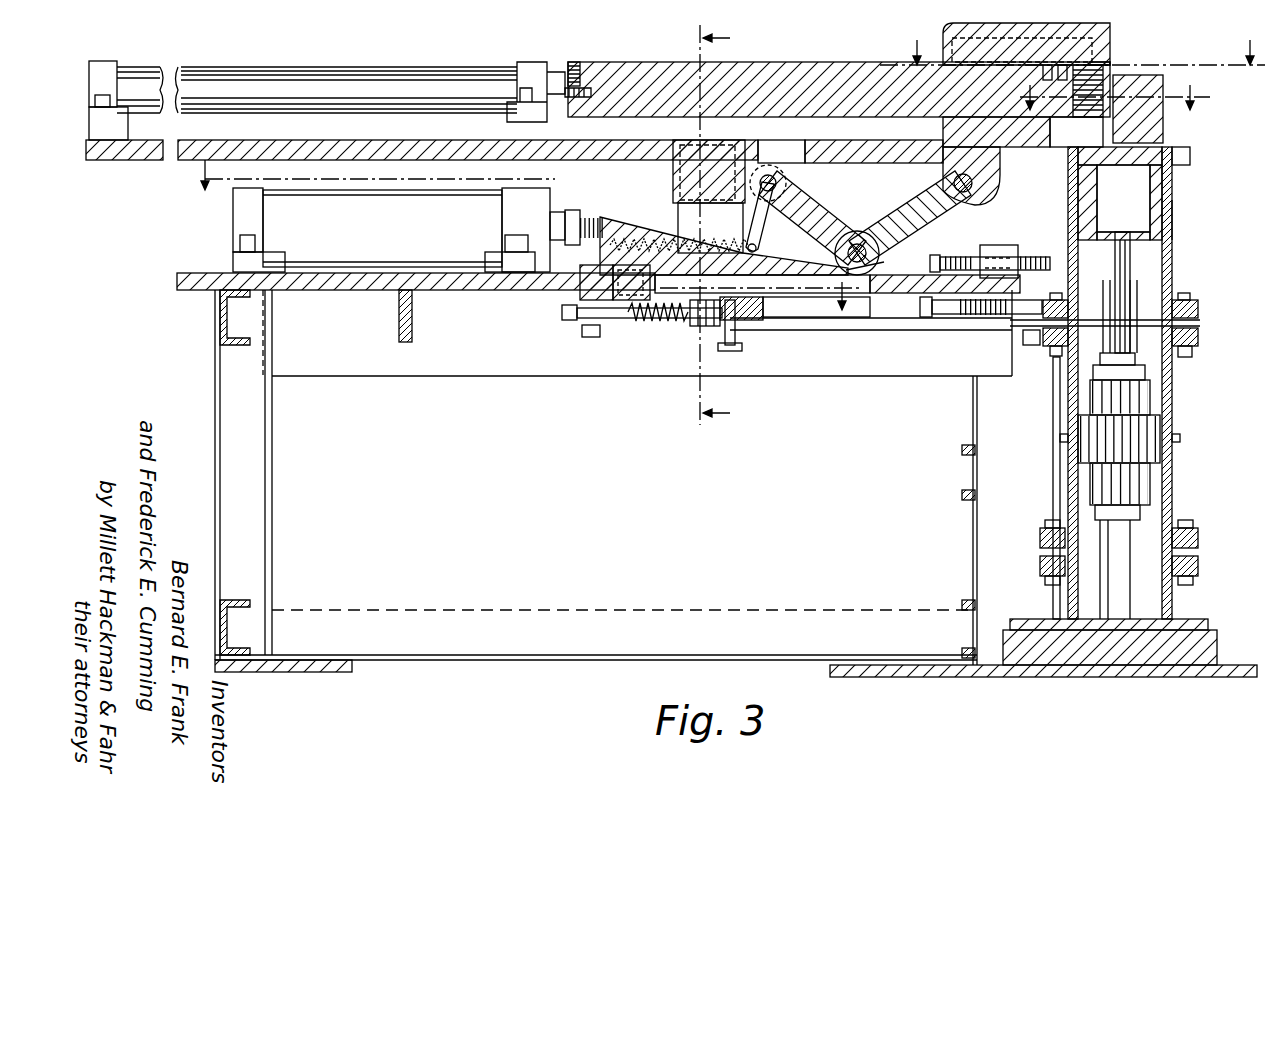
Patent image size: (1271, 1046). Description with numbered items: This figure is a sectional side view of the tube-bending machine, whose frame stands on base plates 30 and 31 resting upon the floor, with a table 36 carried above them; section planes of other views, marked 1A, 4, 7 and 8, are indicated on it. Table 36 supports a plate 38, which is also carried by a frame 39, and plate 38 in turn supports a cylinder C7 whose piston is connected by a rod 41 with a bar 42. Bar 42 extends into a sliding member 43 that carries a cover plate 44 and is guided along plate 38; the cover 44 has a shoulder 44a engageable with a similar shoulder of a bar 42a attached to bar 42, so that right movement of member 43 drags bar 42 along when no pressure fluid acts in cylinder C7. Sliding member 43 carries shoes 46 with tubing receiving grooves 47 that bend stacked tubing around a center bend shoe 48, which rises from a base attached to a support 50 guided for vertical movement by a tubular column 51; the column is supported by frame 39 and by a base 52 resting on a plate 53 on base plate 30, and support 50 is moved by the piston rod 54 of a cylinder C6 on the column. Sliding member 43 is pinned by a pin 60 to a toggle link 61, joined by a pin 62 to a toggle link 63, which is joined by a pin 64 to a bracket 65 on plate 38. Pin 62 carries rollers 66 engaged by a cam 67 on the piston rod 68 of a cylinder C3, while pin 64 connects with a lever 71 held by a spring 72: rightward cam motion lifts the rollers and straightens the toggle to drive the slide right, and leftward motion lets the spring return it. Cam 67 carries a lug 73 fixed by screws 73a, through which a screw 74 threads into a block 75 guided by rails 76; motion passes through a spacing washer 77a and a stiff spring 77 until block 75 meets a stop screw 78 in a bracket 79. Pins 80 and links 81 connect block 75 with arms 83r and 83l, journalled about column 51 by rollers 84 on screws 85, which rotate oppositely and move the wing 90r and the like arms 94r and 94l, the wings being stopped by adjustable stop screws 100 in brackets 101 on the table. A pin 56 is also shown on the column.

The base plate 30 is at (1195, 677).
The base plate 31 is at (305, 672).
The table 36 is at (177, 278).
The plate 38 is at (244, 140).
The frame 39 is at (678, 217).
The rod 41 is at (570, 62).
The bar 42 is at (864, 62).
The bar 42a is at (1108, 65).
The sliding member 43 is at (943, 130).
The cover plate 44 is at (943, 30).
The shoulder 44a is at (1055, 65).
The shoes 46 is at (1076, 132).
The tubing receiving grooves 47 is at (1104, 83).
The center bend shoe 48 is at (1153, 75).
The support 50 is at (1162, 180).
The tubular column 51 is at (1172, 217).
The base 52 is at (1200, 619).
The plate 53 is at (1217, 645).
The piston rod 54 is at (1125, 265).
The pin 56 is at (1180, 438).
The pin 60 is at (972, 185).
The toggle link 61 is at (905, 202).
The pin 62 is at (857, 232).
The toggle link 63 is at (814, 205).
The pin 64 is at (773, 165).
The bracket 65 is at (673, 180).
The rollers 66 is at (885, 265).
The cam 67 is at (793, 264).
The piston rod 68 is at (572, 210).
The lever 71 is at (748, 220).
The spring 72 is at (724, 244).
The lug 73 is at (580, 325).
The screws 73a is at (580, 338).
The screw 74 is at (562, 320).
The block 75 is at (700, 328).
The rails 76 is at (818, 317).
The spring 77 is at (646, 325).
The spacing washer 77a is at (625, 325).
The screw 78 is at (915, 316).
The bracket 79 is at (988, 320).
The pins 80 is at (732, 352).
The links 81 is at (860, 332).
The arm 83r is at (1032, 345).
The arm 83l is at (1195, 311).
The rollers 84 is at (1198, 345).
The screws 85 is at (1191, 357).
The wing 90r is at (1053, 410).
The arm 94r is at (1040, 560).
The arm 94l is at (1198, 545).
The stop screws 100 is at (960, 258).
The brackets 101 is at (1014, 238).
The cylinder C3 is at (370, 192).
The cylinder C6 is at (1150, 483).
The cylinder C7 is at (400, 67).
The section line 1A is at (1250, 47).
The section line 4 is at (530, 237).
The section line 7 is at (698, 225).
The section line 8 is at (1111, 107).